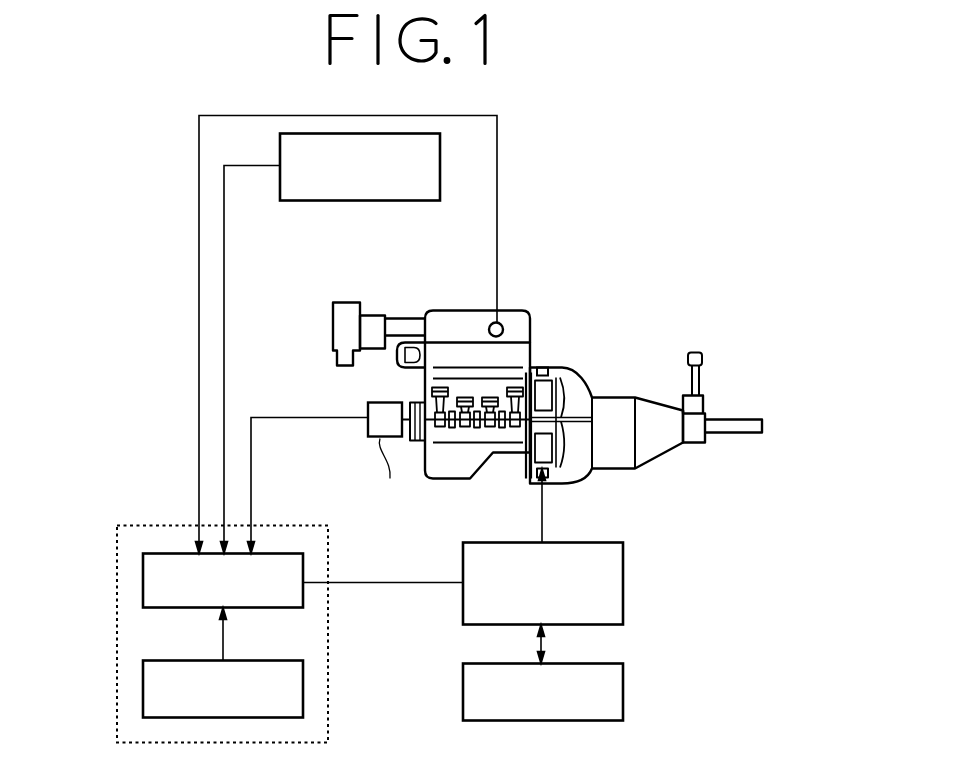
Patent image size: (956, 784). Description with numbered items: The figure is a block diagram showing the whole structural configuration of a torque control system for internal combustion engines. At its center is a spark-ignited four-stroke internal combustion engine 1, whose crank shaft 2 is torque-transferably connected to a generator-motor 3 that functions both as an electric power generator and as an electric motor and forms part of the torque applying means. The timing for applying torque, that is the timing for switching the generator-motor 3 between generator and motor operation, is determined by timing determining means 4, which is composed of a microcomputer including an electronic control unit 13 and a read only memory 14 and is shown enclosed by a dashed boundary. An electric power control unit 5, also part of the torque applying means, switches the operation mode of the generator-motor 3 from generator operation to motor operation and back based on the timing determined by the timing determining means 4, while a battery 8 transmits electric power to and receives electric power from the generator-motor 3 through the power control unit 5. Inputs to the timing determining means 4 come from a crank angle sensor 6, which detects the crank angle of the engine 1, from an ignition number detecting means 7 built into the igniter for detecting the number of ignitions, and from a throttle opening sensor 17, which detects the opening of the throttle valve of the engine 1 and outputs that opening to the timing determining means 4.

The internal combustion engine 1 is at (438, 355).
The crank shaft 2 is at (530, 367).
The generator-motor 3 is at (545, 366).
The timing determining means 4 is at (329, 731).
The electric power control unit 5 is at (625, 570).
The crank angle sensor 6 is at (369, 404).
The ignition number detecting means 7 is at (491, 323).
The battery 8 is at (625, 697).
The electronic control unit 13 is at (304, 570).
The read only memory 14 is at (304, 693).
The throttle opening sensor 17 is at (317, 201).